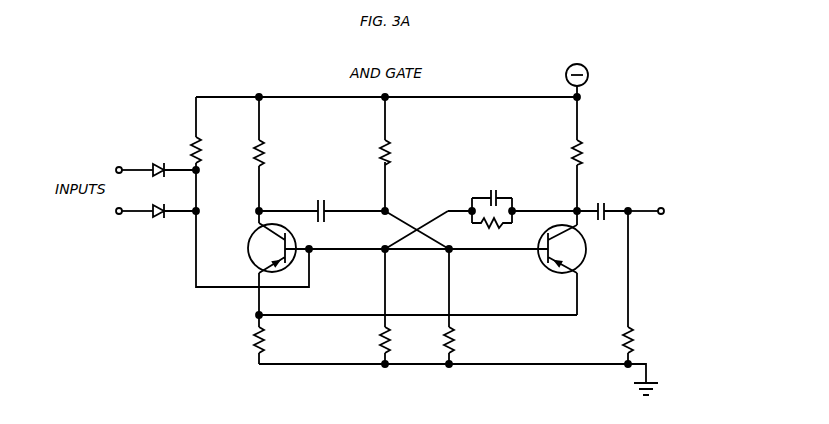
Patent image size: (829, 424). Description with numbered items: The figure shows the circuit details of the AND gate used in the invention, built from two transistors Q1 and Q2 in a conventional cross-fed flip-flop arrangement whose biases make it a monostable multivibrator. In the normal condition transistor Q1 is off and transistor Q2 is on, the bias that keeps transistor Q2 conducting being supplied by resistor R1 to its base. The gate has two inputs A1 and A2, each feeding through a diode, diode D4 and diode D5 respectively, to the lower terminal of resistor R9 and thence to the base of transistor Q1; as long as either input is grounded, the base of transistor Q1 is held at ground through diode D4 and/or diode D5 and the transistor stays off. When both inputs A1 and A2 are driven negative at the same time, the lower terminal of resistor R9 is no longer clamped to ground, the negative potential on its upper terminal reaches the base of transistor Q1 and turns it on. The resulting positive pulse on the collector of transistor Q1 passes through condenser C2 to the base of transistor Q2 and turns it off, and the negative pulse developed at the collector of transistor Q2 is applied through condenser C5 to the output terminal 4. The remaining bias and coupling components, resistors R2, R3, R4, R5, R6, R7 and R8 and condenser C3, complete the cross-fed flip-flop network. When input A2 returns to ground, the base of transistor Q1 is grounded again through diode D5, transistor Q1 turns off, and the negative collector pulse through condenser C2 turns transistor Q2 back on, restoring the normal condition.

The input A1 is at (122, 171).
The input A2 is at (120, 212).
The diode D4 is at (159, 163).
The diode D5 is at (170, 219).
The resistor R9 is at (207, 150).
The resistor R2 is at (269, 153).
The resistor R1 is at (395, 152).
The resistor R3 is at (588, 152).
The condenser C2 is at (322, 206).
The condenser C3 is at (524, 198).
The resistor R4 is at (492, 233).
The condenser C5 is at (602, 201).
The transistor Q1 is at (260, 248).
The transistor Q2 is at (574, 249).
The resistor R5 is at (270, 340).
The resistor R6 is at (367, 340).
The resistor R7 is at (460, 340).
The resistor R8 is at (639, 340).
The output terminal 4 is at (679, 205).